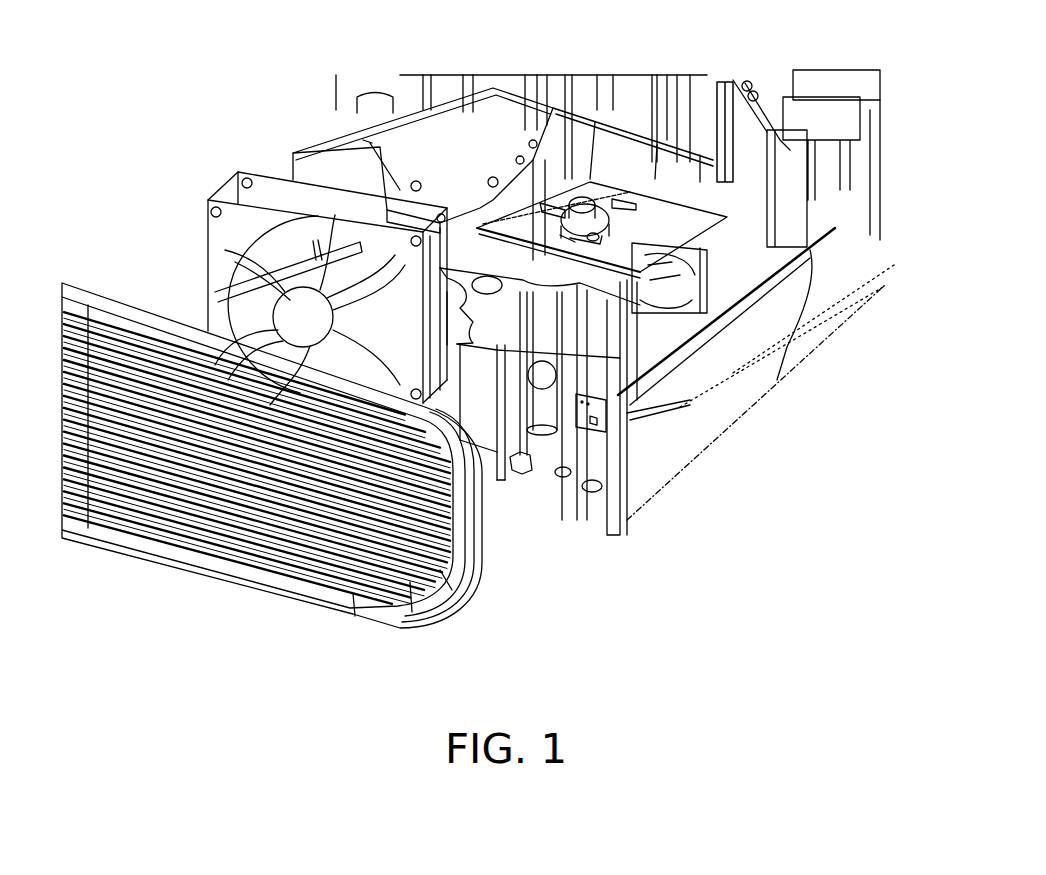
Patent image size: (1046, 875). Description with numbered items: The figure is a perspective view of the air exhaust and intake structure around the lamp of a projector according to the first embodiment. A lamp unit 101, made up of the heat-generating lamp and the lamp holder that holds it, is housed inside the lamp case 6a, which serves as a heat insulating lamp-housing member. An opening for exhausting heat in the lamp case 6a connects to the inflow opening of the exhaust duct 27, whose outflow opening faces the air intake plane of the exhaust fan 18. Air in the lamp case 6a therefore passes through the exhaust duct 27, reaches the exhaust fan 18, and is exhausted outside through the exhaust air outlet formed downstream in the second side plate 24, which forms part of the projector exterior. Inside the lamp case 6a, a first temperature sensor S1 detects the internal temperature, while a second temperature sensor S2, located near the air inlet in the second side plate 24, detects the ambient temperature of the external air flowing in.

The exhaust fan 18 is at (212, 232).
The second side plate 24 is at (452, 505).
The exhaust duct 27 is at (440, 147).
The first temperature sensor S1 is at (592, 192).
The lamp case 6a is at (650, 228).
The lamp unit 101 is at (680, 300).
The second temperature sensor S2 is at (600, 422).